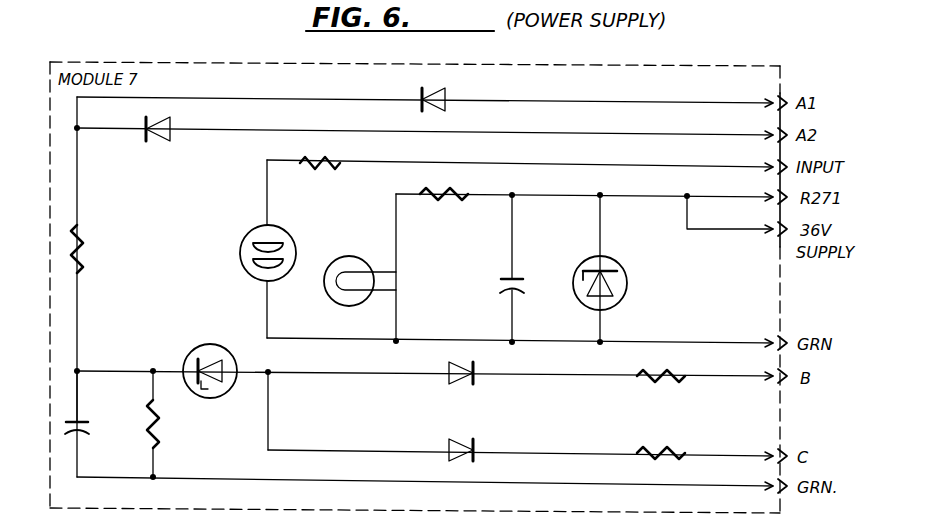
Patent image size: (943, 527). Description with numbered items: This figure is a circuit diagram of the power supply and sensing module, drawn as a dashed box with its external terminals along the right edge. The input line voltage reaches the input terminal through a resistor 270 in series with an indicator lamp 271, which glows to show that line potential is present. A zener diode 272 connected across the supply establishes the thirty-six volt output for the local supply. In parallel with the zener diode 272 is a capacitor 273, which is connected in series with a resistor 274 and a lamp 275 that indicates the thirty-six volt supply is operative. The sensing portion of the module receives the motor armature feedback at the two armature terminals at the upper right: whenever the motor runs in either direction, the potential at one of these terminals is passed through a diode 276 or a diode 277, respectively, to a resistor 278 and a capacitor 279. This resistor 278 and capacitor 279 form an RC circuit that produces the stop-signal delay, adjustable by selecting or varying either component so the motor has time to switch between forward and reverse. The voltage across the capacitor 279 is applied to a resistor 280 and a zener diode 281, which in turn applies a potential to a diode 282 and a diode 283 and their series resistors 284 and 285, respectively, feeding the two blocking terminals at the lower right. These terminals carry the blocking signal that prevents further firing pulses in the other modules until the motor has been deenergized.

The resistor 270 is at (323, 171).
The indicator lamp 271 is at (241, 258).
The zener diode 272 is at (628, 284).
The capacitor 273 is at (505, 286).
The resistor 274 is at (441, 200).
The lamp 275 is at (343, 306).
The diode 276 is at (418, 95).
The diode 277 is at (164, 143).
The resistor 278 is at (88, 263).
The capacitor 279 is at (106, 415).
The resistor 280 is at (146, 428).
The zener diode 281 is at (214, 348).
The diode 282 is at (465, 386).
The diode 283 is at (470, 442).
The series resistor 284 is at (654, 383).
The series resistor 285 is at (650, 452).